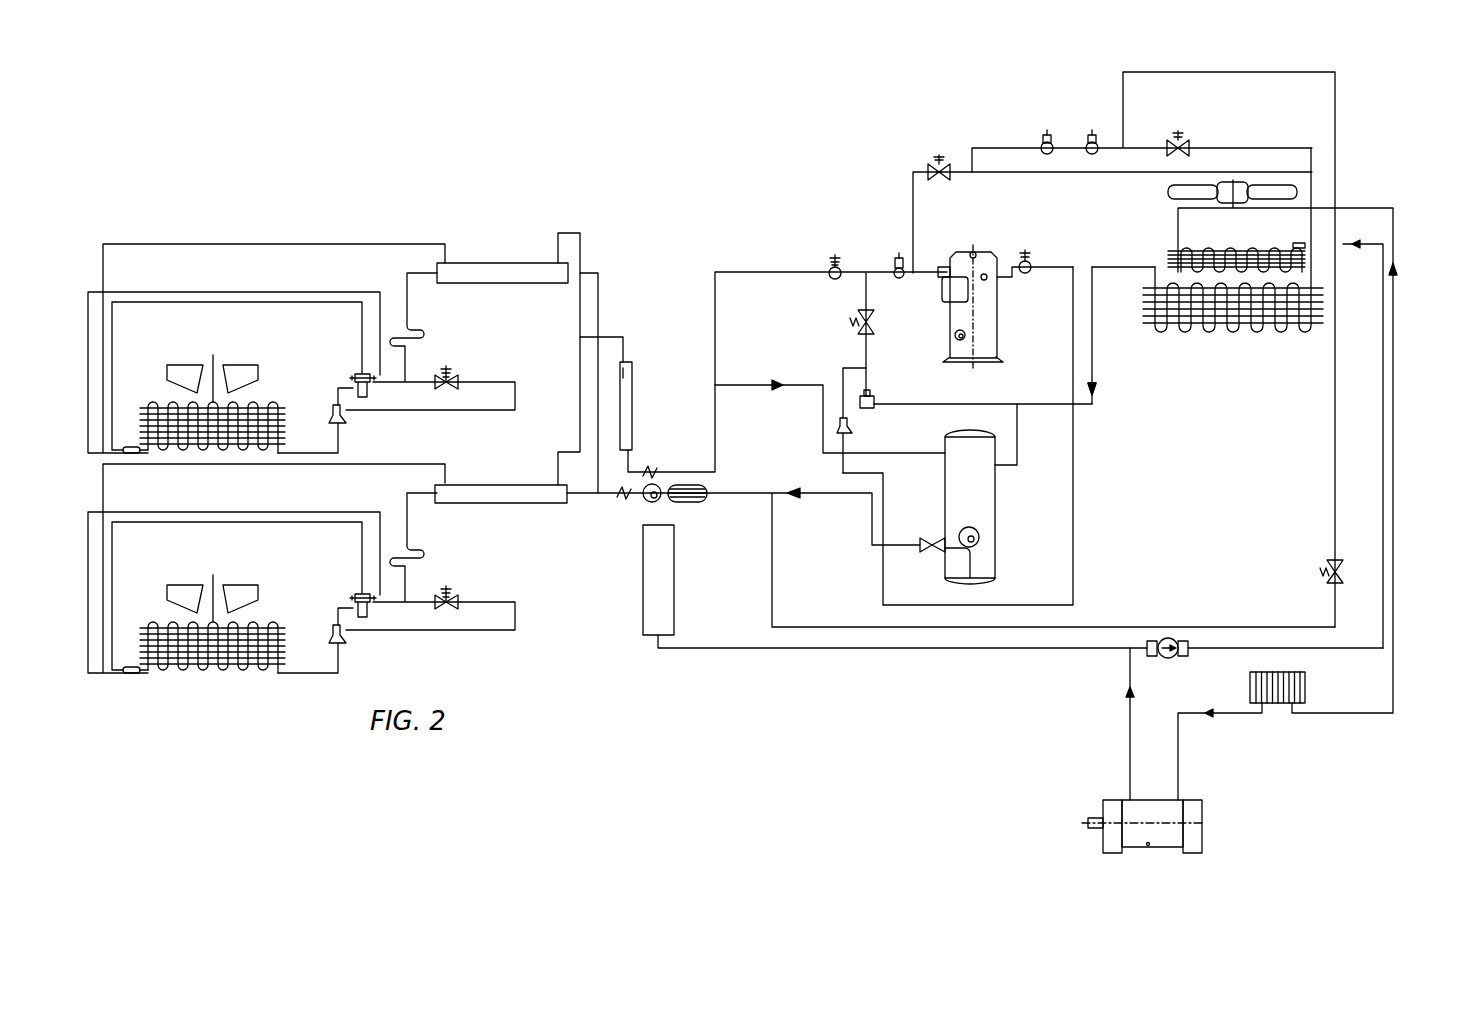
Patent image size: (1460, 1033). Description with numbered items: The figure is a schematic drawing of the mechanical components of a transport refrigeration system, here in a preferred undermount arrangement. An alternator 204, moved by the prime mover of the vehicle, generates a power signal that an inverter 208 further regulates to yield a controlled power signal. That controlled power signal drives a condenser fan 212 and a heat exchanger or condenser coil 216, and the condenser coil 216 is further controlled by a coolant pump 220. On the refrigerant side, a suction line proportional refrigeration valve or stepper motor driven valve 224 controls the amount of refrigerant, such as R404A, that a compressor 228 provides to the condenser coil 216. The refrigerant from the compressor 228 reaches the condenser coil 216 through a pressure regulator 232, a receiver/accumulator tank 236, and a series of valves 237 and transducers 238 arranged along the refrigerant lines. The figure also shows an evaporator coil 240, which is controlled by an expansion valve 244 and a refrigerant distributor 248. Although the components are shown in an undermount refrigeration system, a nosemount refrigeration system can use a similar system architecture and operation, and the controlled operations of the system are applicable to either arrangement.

The alternator 204 is at (1125, 850).
The inverter 208 is at (1270, 705).
The condenser fan 212 is at (1297, 182).
The condenser coil 216 is at (1302, 273).
The coolant pump 220 is at (1168, 637).
The suction line proportional refrigeration valve 224 is at (827, 255).
The compressor 228 is at (993, 253).
The pressure regulator 232 is at (877, 400).
The receiver/accumulator tank 236 is at (993, 517).
The valves 237 is at (845, 322).
The transducers 238 is at (900, 248).
The evaporator coil 240 is at (263, 393).
The expansion valve 244 is at (372, 374).
The refrigerant distributor 248 is at (350, 420).